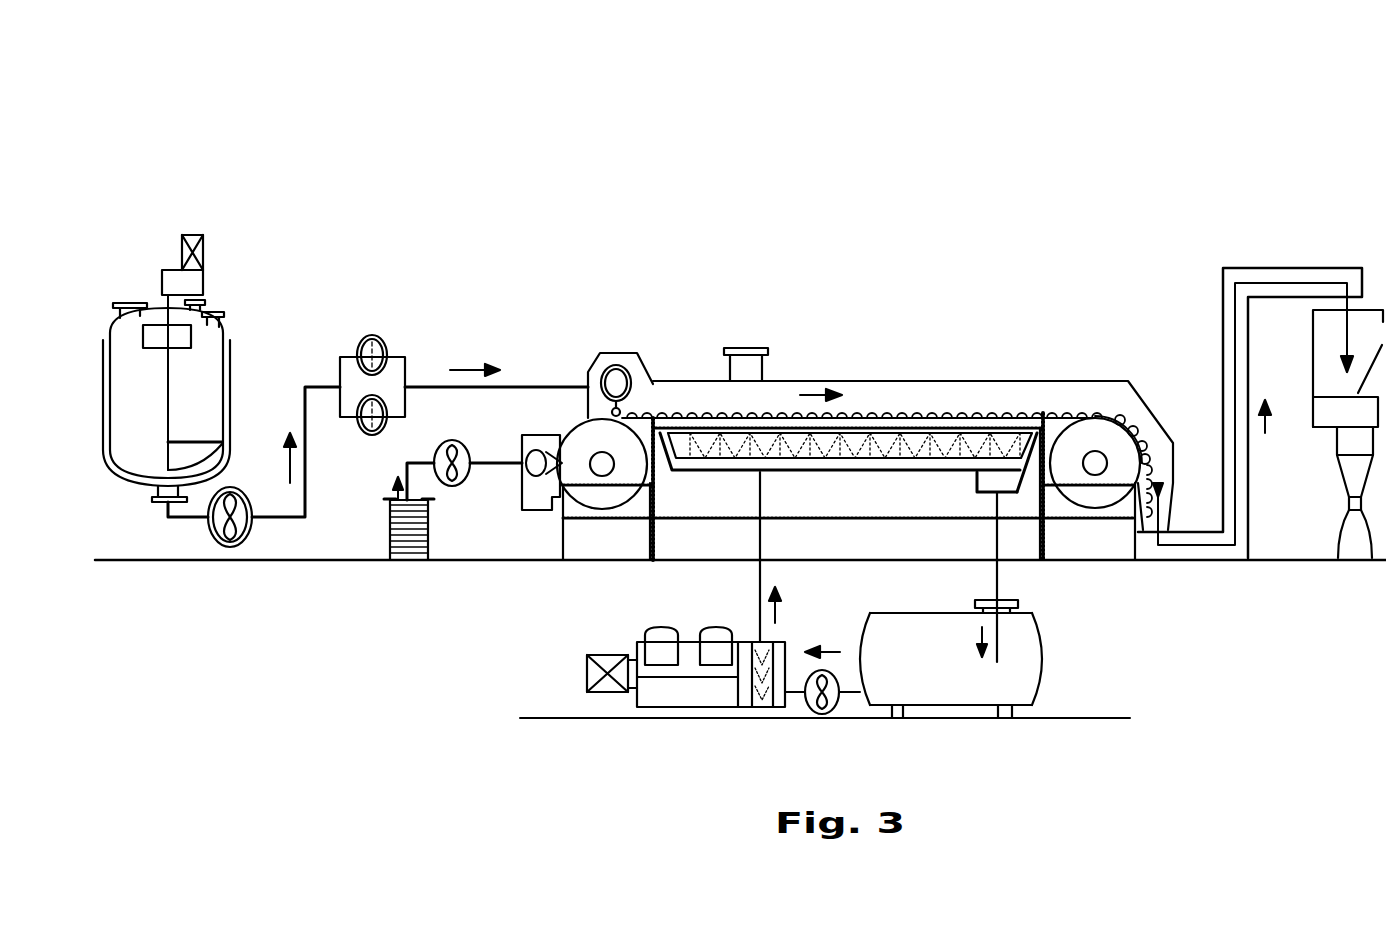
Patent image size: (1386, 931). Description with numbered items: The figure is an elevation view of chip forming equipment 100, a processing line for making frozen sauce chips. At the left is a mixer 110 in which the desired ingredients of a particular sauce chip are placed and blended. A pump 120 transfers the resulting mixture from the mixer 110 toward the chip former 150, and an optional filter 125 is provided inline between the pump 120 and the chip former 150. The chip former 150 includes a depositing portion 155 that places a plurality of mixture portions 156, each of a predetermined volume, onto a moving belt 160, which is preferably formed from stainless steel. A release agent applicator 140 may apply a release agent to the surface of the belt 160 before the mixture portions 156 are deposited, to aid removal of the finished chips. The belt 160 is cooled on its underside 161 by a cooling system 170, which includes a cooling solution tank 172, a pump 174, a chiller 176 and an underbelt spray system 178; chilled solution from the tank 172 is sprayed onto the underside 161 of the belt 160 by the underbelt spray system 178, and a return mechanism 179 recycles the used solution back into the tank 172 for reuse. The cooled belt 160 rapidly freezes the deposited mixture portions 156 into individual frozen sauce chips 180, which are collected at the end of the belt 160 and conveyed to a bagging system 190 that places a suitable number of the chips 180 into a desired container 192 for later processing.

The chip forming equipment 100 is at (306, 180).
The mixer 110 is at (225, 338).
The pump 120 is at (210, 537).
The filter 125 is at (372, 338).
The release agent applicator 140 is at (497, 466).
The chip former 150 is at (892, 381).
The depositing portion 155 is at (615, 364).
The mixture portions 156 is at (621, 411).
The moving belt 160 is at (576, 425).
The underside 161 is at (1062, 438).
The cooling system 170 is at (1110, 745).
The cooling solution tank 172 is at (1045, 648).
The pump 174 is at (830, 713).
The chiller 176 is at (648, 700).
The underbelt spray system 178 is at (717, 472).
The return mechanism 179 is at (977, 474).
The frozen sauce chips 180 is at (1012, 412).
The bagging system 190 is at (1313, 427).
The container 192 is at (1352, 558).